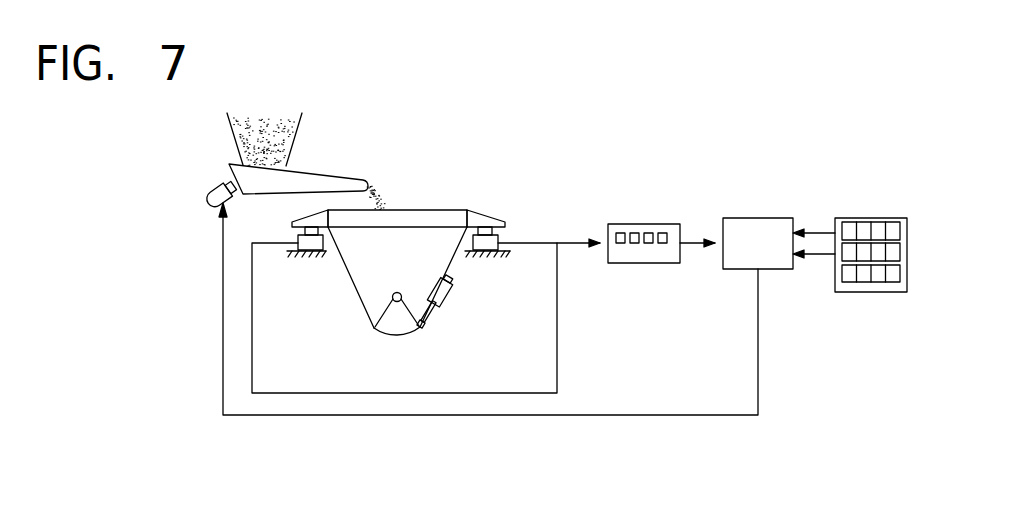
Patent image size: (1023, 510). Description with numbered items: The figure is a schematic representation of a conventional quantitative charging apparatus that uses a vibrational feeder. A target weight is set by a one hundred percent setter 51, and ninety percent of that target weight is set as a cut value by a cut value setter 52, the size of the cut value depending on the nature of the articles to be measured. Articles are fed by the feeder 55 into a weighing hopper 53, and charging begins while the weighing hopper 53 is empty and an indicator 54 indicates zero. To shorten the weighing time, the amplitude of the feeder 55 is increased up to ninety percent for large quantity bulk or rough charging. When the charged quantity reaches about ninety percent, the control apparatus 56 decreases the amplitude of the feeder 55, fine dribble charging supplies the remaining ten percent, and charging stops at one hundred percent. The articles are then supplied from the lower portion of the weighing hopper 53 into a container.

The 100% setter 51 is at (908, 230).
The cut value setter 52 is at (902, 252).
The weighing hopper 53 is at (350, 277).
The indicator 54 is at (642, 224).
The feeder 55 is at (343, 178).
The control apparatus 56 is at (763, 218).